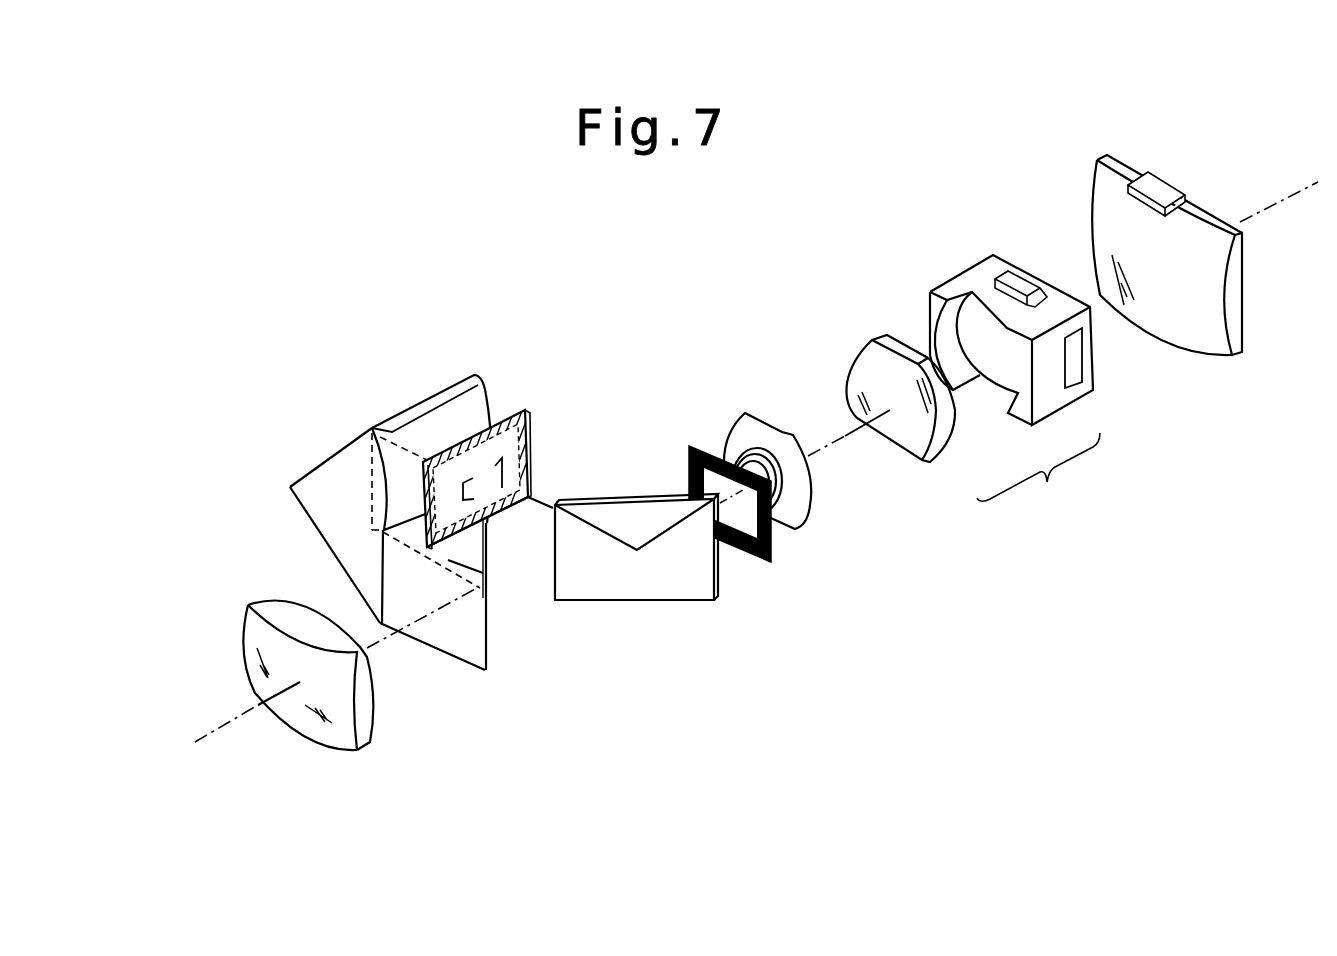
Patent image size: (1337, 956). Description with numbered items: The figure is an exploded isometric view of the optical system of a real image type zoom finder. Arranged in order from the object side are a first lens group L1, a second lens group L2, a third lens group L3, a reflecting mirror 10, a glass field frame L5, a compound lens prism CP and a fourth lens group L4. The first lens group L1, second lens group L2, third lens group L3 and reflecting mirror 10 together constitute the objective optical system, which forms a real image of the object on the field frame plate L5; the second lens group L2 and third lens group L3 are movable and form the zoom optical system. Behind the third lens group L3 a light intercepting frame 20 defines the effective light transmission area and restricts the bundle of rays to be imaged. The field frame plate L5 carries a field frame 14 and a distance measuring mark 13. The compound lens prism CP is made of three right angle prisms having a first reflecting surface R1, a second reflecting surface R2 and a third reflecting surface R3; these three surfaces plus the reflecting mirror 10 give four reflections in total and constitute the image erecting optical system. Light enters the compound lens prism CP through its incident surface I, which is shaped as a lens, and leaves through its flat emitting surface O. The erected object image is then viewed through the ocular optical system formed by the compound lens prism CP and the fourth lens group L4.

The incident surface I is at (460, 423).
The first reflecting surface R1 is at (356, 437).
The second reflecting surface R2 is at (325, 545).
The third reflecting surface R3 is at (492, 600).
The compound lens prism CP is at (452, 651).
The emitting surface O is at (425, 630).
The glass field frame L5 is at (524, 426).
The distance measuring mark 13 is at (503, 457).
The field frame 14 is at (510, 505).
The light intercepting frame 20 is at (702, 450).
The reflecting mirror 10 is at (635, 600).
The third lens group L3 is at (792, 528).
The second lens group L2 is at (973, 386).
The first lens group L1 is at (1213, 348).
The fourth lens group L4 is at (332, 750).